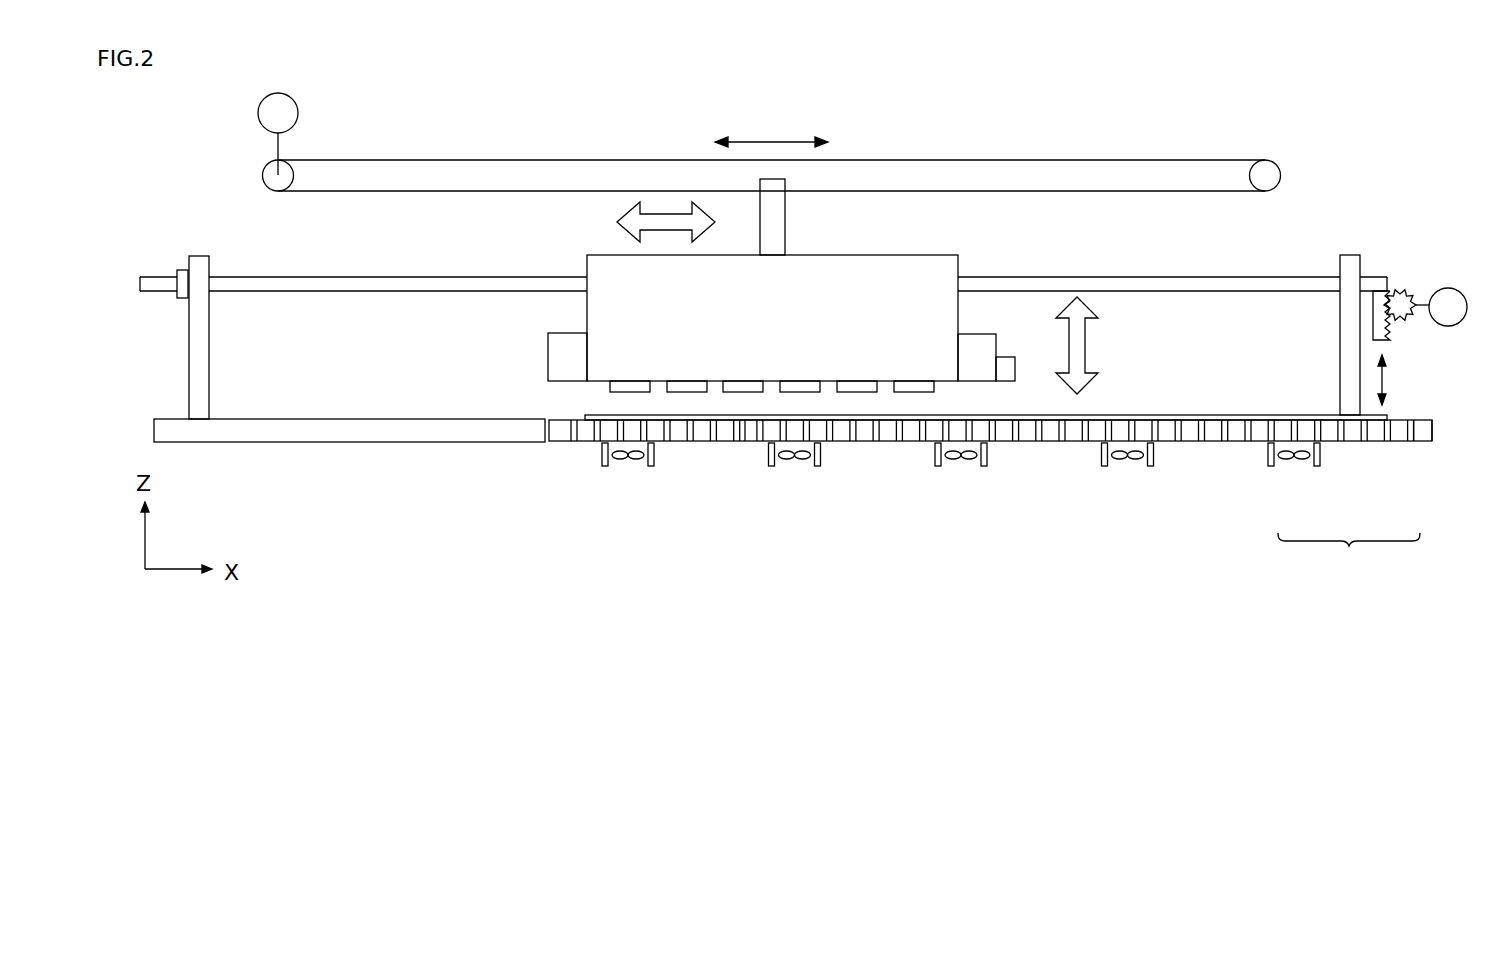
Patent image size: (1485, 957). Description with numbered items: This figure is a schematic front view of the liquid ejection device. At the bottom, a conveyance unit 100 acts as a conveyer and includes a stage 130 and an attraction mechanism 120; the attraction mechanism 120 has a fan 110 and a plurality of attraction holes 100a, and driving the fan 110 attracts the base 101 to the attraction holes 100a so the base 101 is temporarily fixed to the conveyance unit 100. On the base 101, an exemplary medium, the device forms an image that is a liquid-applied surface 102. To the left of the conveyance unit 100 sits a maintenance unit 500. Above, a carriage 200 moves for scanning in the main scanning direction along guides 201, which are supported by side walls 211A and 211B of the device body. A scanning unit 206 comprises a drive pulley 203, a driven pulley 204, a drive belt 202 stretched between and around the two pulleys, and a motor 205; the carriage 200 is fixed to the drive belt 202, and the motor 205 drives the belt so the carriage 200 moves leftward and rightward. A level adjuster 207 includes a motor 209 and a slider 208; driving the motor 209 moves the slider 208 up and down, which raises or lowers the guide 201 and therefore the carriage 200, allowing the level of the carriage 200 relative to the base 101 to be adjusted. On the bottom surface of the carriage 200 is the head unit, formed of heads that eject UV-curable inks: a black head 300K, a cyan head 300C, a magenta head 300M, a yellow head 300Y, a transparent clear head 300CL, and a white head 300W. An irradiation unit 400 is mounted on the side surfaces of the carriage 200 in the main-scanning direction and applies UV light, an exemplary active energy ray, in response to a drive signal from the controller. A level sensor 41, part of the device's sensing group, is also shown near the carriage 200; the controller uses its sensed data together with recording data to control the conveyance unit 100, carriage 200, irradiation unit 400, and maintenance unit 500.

The conveyance unit 100 is at (874, 441).
The attraction holes 100a is at (1362, 441).
The base 101 is at (743, 441).
The liquid-applied surface 102 is at (714, 421).
The fan 110 is at (632, 474).
The attraction mechanism 120 is at (1349, 555).
The stage 130 is at (1432, 431).
The carriage 200 is at (905, 255).
The guides 201 is at (348, 276).
The drive belt 202 is at (1213, 159).
The drive pulley 203 is at (263, 175).
The driven pulley 204 is at (1281, 176).
The motor 205 is at (299, 113).
The scanning unit 206 is at (1093, 146).
The level adjuster 207 is at (1419, 272).
The slider 208 is at (1402, 337).
The motor 209 is at (1448, 327).
The side wall 211A is at (188, 345).
The side wall 211B is at (1351, 254).
The head for black ink 300K is at (630, 377).
The head for cyan ink 300C is at (685, 381).
The head for magenta ink 300M is at (744, 377).
The head for yellow ink 300Y is at (799, 381).
The head for clear ink 300CL is at (859, 377).
The head for white ink 300W is at (911, 381).
The irradiation unit 400 is at (548, 356).
The level sensor 41 is at (996, 356).
The maintenance unit 500 is at (348, 418).